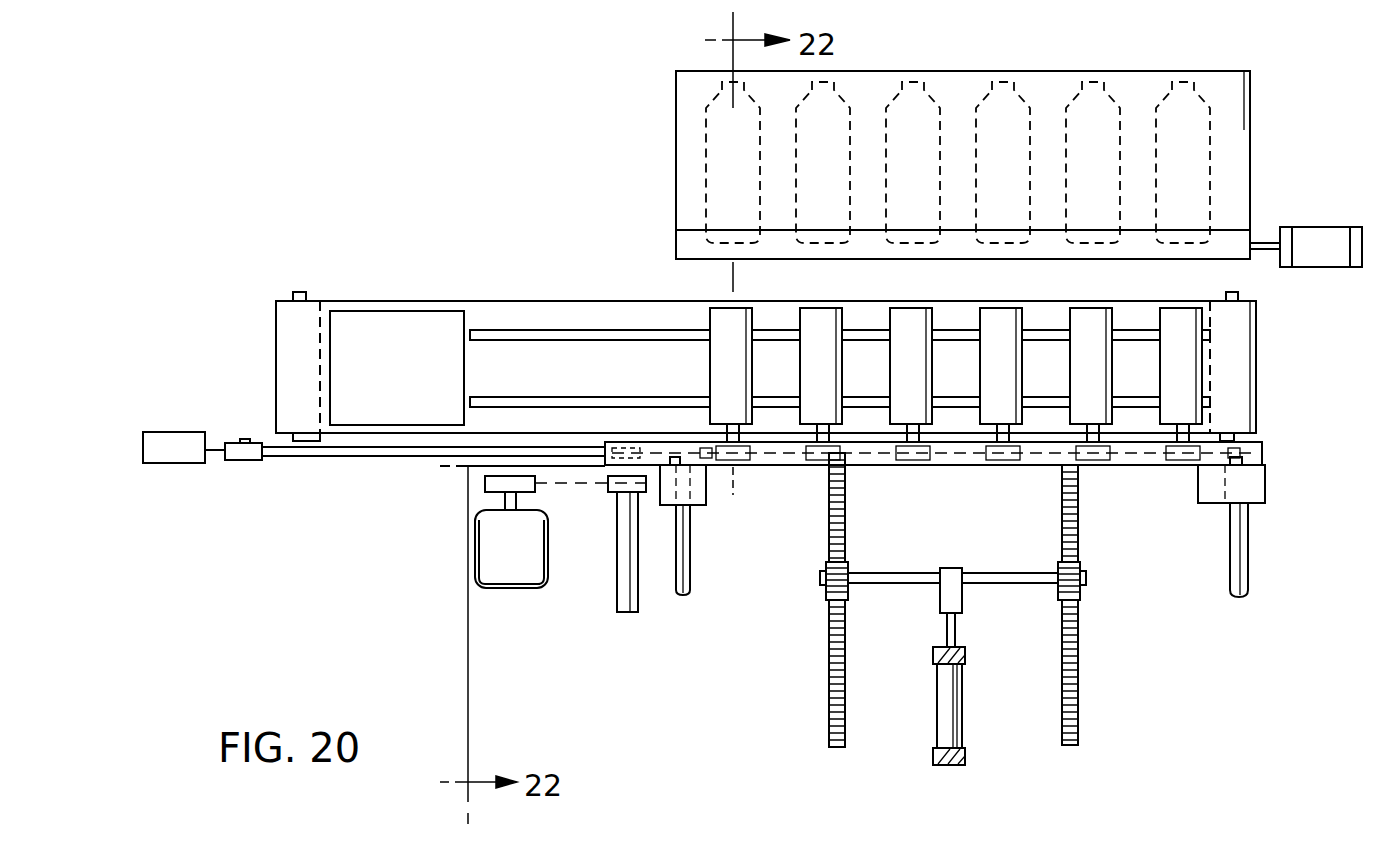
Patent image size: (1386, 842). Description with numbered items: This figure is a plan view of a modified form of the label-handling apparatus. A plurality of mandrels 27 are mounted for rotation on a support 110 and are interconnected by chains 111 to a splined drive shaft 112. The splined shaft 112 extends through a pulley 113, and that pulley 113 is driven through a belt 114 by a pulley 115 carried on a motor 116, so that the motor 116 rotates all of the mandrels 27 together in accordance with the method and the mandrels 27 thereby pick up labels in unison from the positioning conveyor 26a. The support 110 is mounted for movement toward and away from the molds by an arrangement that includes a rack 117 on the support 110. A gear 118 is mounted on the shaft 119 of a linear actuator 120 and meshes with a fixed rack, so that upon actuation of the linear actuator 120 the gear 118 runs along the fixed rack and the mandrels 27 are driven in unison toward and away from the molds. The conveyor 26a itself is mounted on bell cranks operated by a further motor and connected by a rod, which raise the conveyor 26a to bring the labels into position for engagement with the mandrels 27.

The positioning conveyor 26a is at (537, 313).
The mandrels 27 is at (816, 386).
The support 110 is at (888, 461).
The chains 111 is at (785, 455).
The splined drive shaft 112 is at (640, 597).
The pulley 113 is at (625, 495).
The belt 114 is at (567, 485).
The pulley 115 is at (485, 484).
The motor 116 is at (490, 548).
The rack 117 is at (830, 665).
The gear 118 is at (826, 578).
The shaft 119 is at (947, 628).
The linear actuator 120 is at (942, 690).